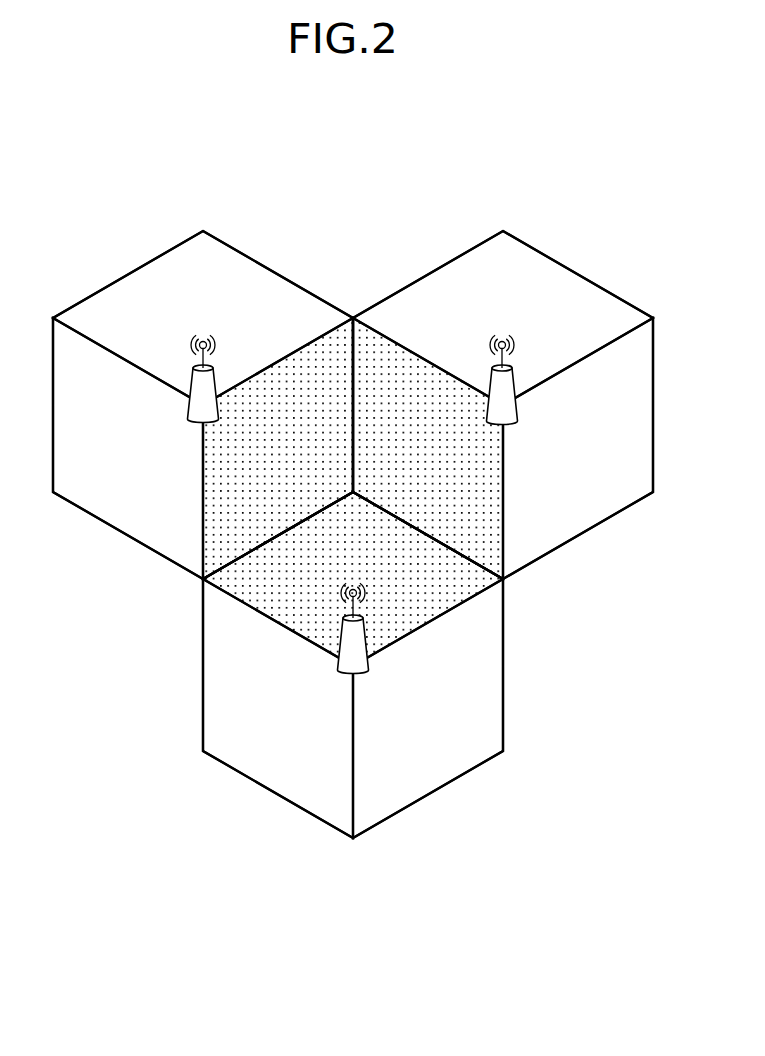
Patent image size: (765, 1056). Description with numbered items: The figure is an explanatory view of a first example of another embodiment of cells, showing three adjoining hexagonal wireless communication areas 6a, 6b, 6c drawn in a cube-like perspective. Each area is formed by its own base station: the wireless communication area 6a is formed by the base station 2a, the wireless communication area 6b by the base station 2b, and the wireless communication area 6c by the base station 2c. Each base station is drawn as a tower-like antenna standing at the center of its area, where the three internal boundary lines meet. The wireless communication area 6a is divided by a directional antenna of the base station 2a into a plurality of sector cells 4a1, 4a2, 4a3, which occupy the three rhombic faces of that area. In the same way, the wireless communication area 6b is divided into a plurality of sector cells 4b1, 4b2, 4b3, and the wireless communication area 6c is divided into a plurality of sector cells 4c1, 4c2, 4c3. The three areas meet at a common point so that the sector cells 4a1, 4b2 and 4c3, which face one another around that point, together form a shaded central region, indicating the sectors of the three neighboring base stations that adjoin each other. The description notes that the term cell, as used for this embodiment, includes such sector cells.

The base station 2a is at (187, 417).
The base station 2b is at (518, 421).
The base station 2c is at (370, 663).
The sector cell 4a1 is at (308, 470).
The sector cell 4a2 is at (142, 481).
The sector cell 4a3 is at (225, 313).
The sector cell 4b1 is at (612, 478).
The sector cell 4b2 is at (450, 470).
The sector cell 4b3 is at (523, 313).
The sector cell 4c1 is at (470, 733).
The sector cell 4c2 is at (308, 732).
The sector cell 4c3 is at (375, 572).
The wireless communication area 6a is at (203, 380).
The wireless communication area 6b is at (503, 379).
The wireless communication area 6c is at (359, 677).